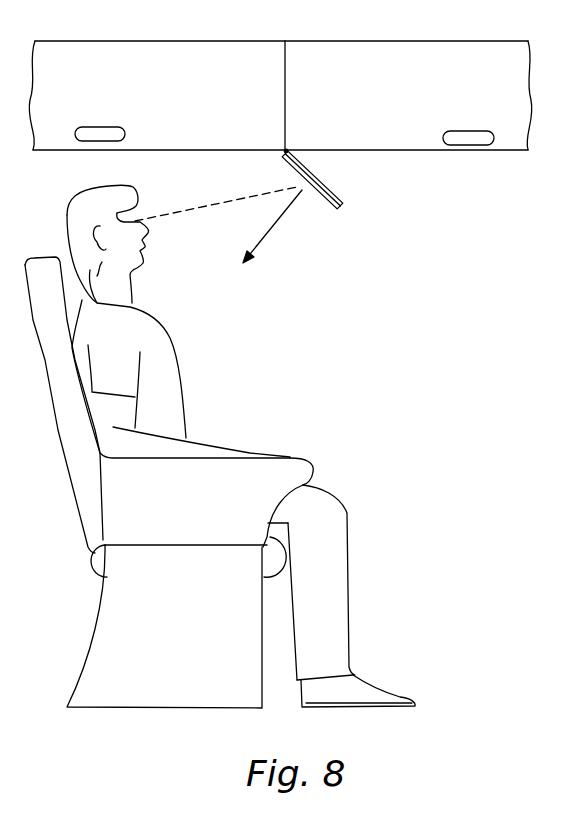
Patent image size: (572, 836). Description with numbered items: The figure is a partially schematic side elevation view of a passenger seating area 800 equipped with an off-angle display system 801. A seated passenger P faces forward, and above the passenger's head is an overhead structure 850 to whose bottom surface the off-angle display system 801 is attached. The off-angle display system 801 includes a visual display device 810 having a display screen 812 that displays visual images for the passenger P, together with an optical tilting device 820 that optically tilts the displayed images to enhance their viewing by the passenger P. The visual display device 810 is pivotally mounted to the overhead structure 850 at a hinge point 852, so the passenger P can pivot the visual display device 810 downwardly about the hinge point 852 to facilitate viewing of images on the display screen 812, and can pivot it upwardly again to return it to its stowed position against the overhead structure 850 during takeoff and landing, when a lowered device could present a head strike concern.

The passenger seating area 800 is at (453, 284).
The off-angle display system 801 is at (329, 220).
The visual display device 810 is at (341, 203).
The display screen 812 is at (320, 196).
The optical tilting device 820 is at (283, 158).
The overhead structure 850 is at (480, 102).
The hinge point 852 is at (286, 150).
The passenger P is at (80, 195).